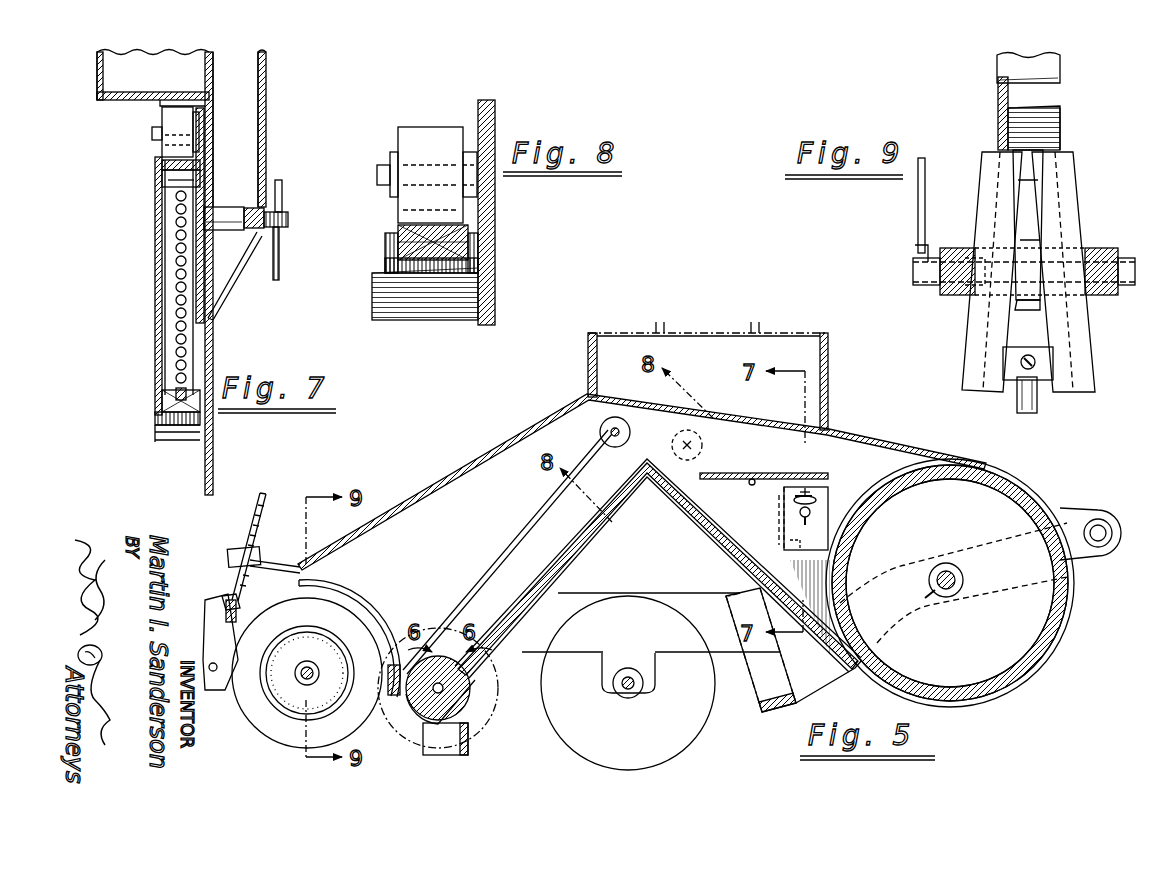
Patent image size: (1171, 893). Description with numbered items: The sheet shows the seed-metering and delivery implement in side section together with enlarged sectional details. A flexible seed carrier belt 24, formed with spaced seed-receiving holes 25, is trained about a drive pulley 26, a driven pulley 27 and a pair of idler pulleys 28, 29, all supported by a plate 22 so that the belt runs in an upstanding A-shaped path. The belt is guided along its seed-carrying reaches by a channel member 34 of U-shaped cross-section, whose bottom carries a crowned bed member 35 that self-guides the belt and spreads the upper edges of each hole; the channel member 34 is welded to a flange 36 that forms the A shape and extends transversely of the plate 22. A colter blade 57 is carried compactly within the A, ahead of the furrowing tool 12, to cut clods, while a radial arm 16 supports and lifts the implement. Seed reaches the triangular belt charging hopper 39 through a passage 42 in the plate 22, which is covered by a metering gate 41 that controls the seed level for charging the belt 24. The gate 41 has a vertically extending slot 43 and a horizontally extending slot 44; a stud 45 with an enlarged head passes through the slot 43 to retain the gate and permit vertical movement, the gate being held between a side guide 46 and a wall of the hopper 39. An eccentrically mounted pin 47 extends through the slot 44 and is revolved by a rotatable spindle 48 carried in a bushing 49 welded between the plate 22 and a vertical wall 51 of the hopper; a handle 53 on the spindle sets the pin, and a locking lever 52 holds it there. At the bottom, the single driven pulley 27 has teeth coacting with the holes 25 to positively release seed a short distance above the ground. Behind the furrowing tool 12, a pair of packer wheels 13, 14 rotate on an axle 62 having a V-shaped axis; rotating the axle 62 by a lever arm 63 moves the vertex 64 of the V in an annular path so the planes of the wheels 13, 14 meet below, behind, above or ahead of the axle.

In FIG. 9, the furrowing tool 12 is at (1037, 400).
In FIG. 5, the furrowing tool 12 is at (470, 752).
In FIG. 9, the packer wheel 13 is at (977, 357).
In FIG. 5, the packer wheel 13 is at (272, 722).
In FIG. 9, the packer wheel 14 is at (1080, 357).
In FIG. 5, the radial arm 16 is at (814, 684).
In FIG. 7, the plate 22 is at (212, 136).
In FIG. 8, the plate 22 is at (495, 243).
In FIG. 9, the plate 22 is at (998, 110).
In FIG. 7, the flexible seed carrier belt 24 is at (170, 302).
In FIG. 8, the flexible seed carrier belt 24 is at (448, 225).
In FIG. 7, the seed-receiving holes 25 is at (186, 347).
In FIG. 5, the drive pulley 26 is at (968, 640).
In FIG. 5, the driven pulley 27 is at (470, 700).
In FIG. 5, the idler pulley 28 is at (612, 447).
In FIG. 7, the idler pulley 29 is at (175, 121).
In FIG. 8, the idler pulley 29 is at (425, 130).
In FIG. 5, the idler pulley 29 is at (702, 450).
In FIG. 7, the channel member 34 is at (160, 400).
In FIG. 8, the channel member 34 is at (388, 248).
In FIG. 7, the crowned bed member 35 is at (160, 422).
In FIG. 8, the crowned bed member 35 is at (385, 265).
In FIG. 7, the flange 36 is at (180, 442).
In FIG. 8, the flange 36 is at (372, 285).
In FIG. 5, the flange 36 is at (575, 565).
In FIG. 7, the belt charging hopper 39 is at (155, 345).
In FIG. 5, the belt charging hopper 39 is at (720, 505).
In FIG. 7, the metering gate 41 is at (235, 296).
In FIG. 5, the metering gate 41 is at (828, 480).
In FIG. 7, the passage 42 is at (205, 282).
In FIG. 5, the passage 42 is at (780, 527).
In FIG. 5, the vertically extending slot 43 is at (816, 500).
In FIG. 5, the horizontally extending slot 44 is at (828, 472).
In FIG. 5, the stud 45 is at (794, 498).
In FIG. 5, the side guide 46 is at (784, 518).
In FIG. 5, the eccentrically mounted pin 47 is at (802, 489).
In FIG. 7, the rotatable spindle 48 is at (252, 208).
In FIG. 7, the bushing 49 is at (226, 207).
In FIG. 7, the vertical wall 51 is at (266, 120).
In FIG. 7, the locking lever 52 is at (279, 266).
In FIG. 7, the handle 53 is at (284, 186).
In FIG. 5, the colter blade 57 is at (638, 746).
In FIG. 9, the axle 62 is at (1105, 250).
In FIG. 9, the lever arm 63 is at (918, 205).
In FIG. 9, the vertex 64 is at (1024, 300).